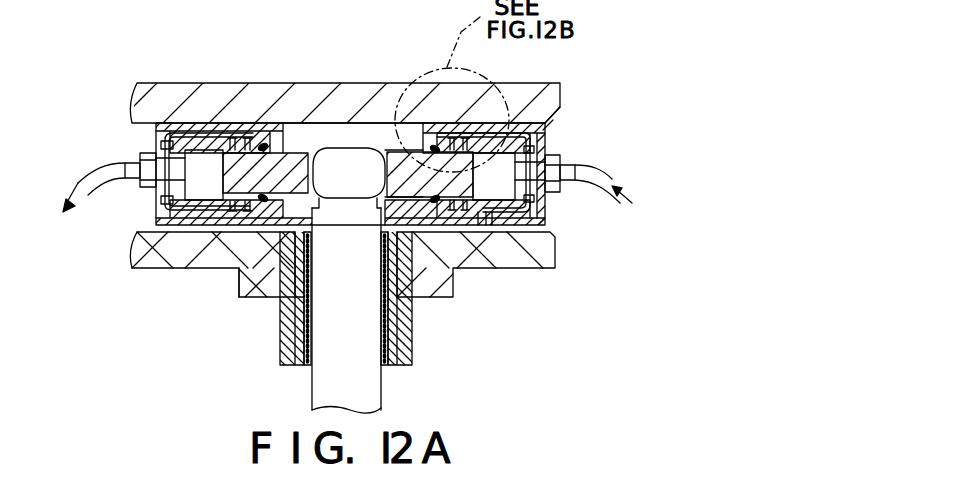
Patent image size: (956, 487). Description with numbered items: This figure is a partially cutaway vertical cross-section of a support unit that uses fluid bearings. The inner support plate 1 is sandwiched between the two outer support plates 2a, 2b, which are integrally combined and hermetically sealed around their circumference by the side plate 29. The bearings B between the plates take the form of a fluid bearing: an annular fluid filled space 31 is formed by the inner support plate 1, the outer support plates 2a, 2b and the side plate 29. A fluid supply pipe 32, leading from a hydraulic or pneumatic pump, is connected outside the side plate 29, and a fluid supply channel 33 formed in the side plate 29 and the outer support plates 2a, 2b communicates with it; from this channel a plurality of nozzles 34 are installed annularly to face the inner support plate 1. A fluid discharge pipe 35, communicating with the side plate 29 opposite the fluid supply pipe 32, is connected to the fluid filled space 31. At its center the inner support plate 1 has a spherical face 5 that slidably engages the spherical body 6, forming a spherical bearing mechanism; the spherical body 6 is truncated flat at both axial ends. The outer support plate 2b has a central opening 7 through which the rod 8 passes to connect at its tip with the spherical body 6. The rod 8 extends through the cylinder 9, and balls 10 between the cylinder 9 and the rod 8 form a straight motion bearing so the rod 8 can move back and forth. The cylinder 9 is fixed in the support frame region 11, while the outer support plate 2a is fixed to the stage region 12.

The inner support plate 1 is at (400, 147).
The outer support plate 2a is at (515, 108).
The outer support plate 2b is at (557, 272).
The spherical face 5 is at (272, 150).
The spherical body 6 is at (338, 160).
The opening 7 is at (283, 213).
The rod 8 is at (330, 384).
The cylinder 9 is at (410, 339).
The balls 10 is at (292, 329).
The support frame region 11 is at (150, 242).
The stage region 12 is at (172, 97).
The circumferential side plate 29 is at (547, 212).
The annular fluid filled space 31 is at (546, 130).
The fluid supply pipe 32 is at (605, 173).
The fluid supply channel 33 is at (563, 101).
The nozzles 34 is at (482, 231).
The fluid discharge pipe 35 is at (100, 191).
The bearings B is at (493, 229).